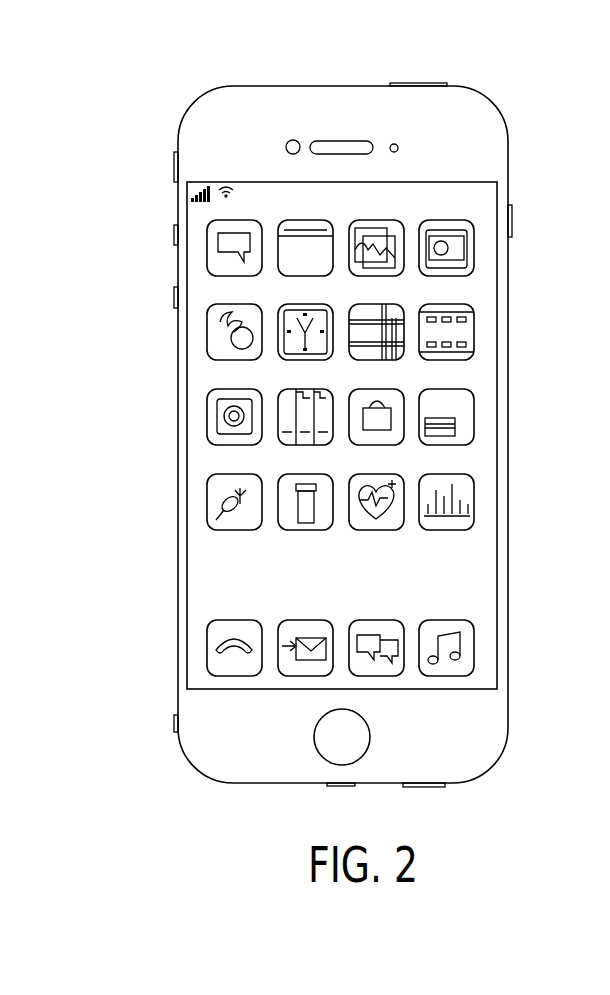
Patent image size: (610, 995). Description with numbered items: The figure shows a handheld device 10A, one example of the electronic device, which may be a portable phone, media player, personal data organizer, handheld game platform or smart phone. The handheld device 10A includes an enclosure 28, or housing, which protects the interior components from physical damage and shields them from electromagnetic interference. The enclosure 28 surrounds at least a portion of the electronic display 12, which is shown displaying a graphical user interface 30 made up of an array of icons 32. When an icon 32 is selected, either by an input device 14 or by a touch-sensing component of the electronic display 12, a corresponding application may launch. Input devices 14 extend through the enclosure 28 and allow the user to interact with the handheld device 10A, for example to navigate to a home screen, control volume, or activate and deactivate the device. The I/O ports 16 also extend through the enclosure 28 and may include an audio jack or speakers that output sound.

The handheld device 10A is at (162, 70).
The electronic display 12 is at (497, 576).
The input devices 14 is at (420, 83).
The I/O ports 16 is at (230, 786).
The enclosure 28 is at (509, 166).
The graphical user interface 30 is at (473, 376).
The icon 32 is at (377, 531).